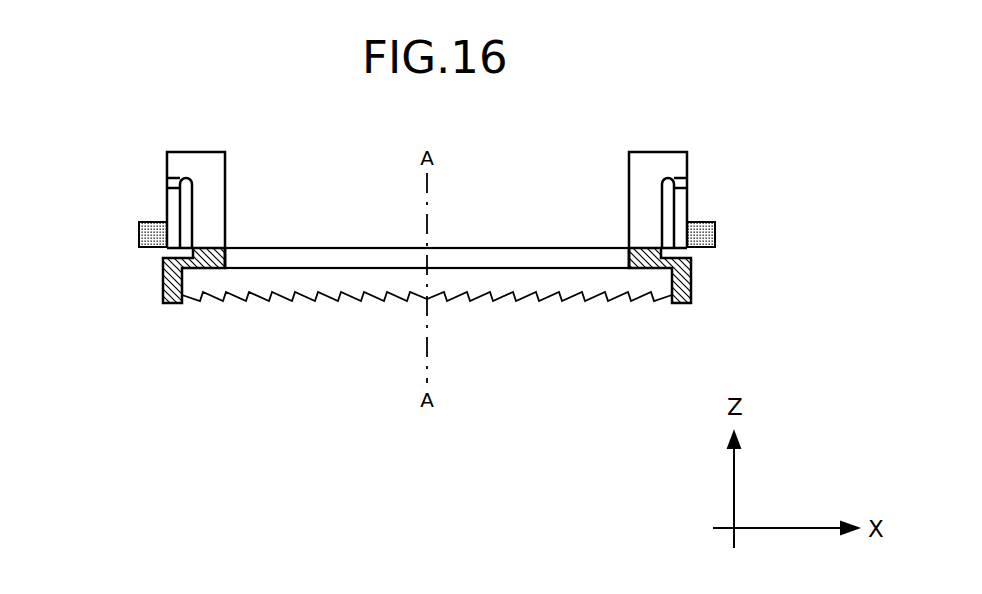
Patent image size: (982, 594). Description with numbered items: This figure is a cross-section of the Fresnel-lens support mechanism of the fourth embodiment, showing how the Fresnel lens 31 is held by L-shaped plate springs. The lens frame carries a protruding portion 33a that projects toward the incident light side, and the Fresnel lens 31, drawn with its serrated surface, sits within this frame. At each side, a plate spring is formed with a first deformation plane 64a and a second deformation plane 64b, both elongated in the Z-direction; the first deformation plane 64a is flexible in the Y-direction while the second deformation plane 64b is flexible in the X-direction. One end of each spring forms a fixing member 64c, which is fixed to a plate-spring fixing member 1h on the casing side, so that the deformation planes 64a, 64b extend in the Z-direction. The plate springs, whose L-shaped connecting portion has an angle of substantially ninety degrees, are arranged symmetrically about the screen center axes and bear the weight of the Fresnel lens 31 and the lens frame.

The plate-spring fixing member 1h is at (144, 233).
The Fresnel lens 31 is at (318, 285).
The protruding portion 33a is at (447, 247).
The first deformation plane 64a is at (216, 208).
The second deformation plane 64b is at (168, 196).
The fixing member 64c is at (166, 251).